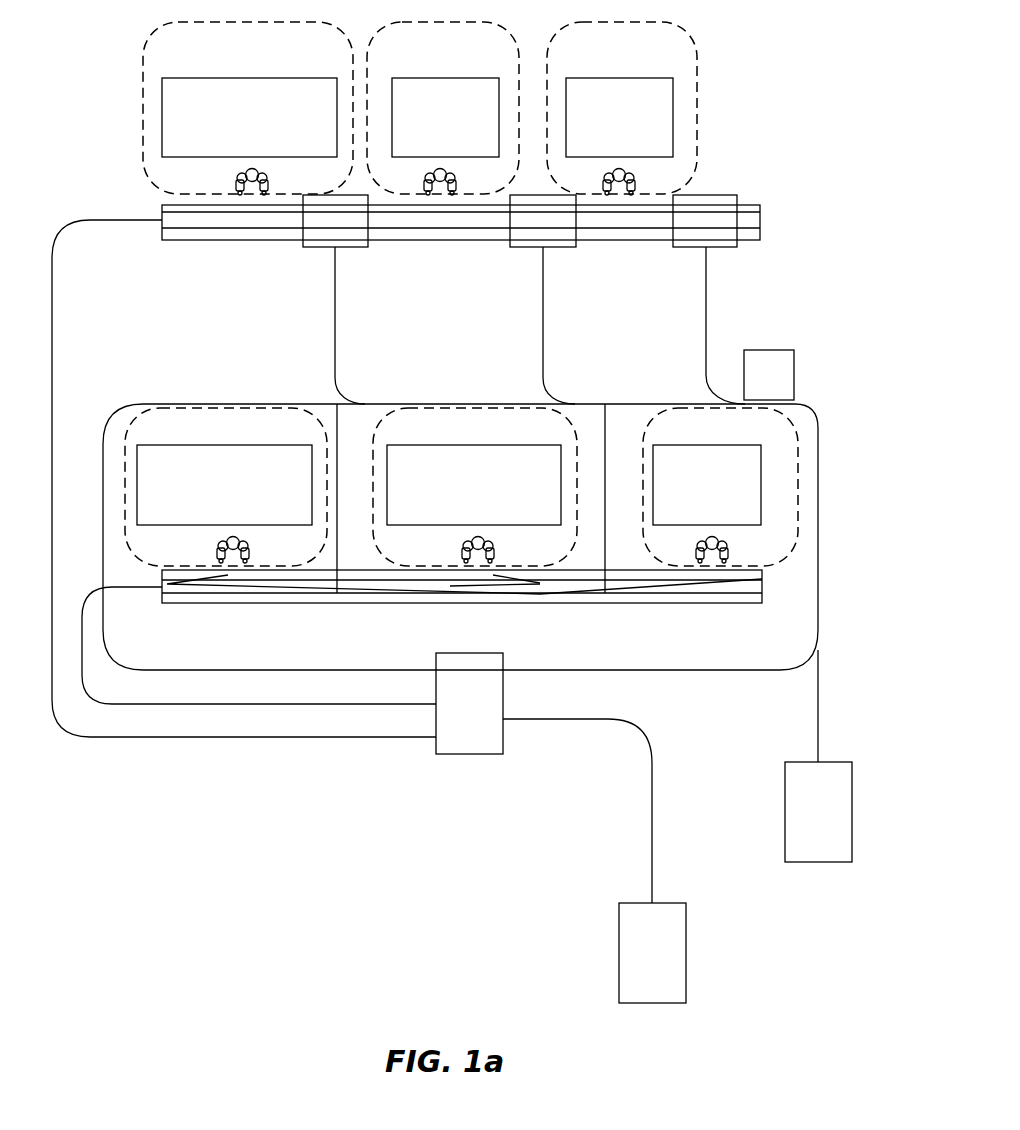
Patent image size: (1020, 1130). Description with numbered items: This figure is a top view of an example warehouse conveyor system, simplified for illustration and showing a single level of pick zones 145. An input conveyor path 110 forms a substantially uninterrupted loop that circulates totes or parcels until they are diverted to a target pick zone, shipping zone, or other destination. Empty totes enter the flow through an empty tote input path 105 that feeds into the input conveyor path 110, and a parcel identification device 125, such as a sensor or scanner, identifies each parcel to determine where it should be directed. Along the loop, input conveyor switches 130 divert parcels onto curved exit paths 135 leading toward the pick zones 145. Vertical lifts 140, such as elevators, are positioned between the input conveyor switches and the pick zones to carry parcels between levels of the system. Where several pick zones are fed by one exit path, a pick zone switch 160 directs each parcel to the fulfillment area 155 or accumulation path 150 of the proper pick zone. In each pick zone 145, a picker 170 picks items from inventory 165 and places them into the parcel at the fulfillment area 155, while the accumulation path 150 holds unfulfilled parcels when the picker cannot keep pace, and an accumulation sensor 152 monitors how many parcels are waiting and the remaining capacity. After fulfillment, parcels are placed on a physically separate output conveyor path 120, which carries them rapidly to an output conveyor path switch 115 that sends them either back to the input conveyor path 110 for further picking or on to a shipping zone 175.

The empty tote input path 105 is at (801, 820).
The input conveyor path 110 is at (160, 404).
The output conveyor path switch 115 is at (452, 713).
The output conveyor path 120 is at (760, 222).
The parcel identification device 125 is at (751, 385).
The input conveyor switch 130 is at (365, 404).
The exit path 135 is at (335, 300).
The vertical lift 140 is at (723, 231).
The pick zone 145 is at (726, 441).
The accumulation path 150 is at (217, 590).
The accumulation sensor 152 is at (725, 576).
The fulfillment area 155 is at (760, 206).
The pick zone switch 160 is at (340, 593).
The inventory 165 is at (725, 494).
The picker 170 is at (250, 554).
The shipping zone 175 is at (635, 961).